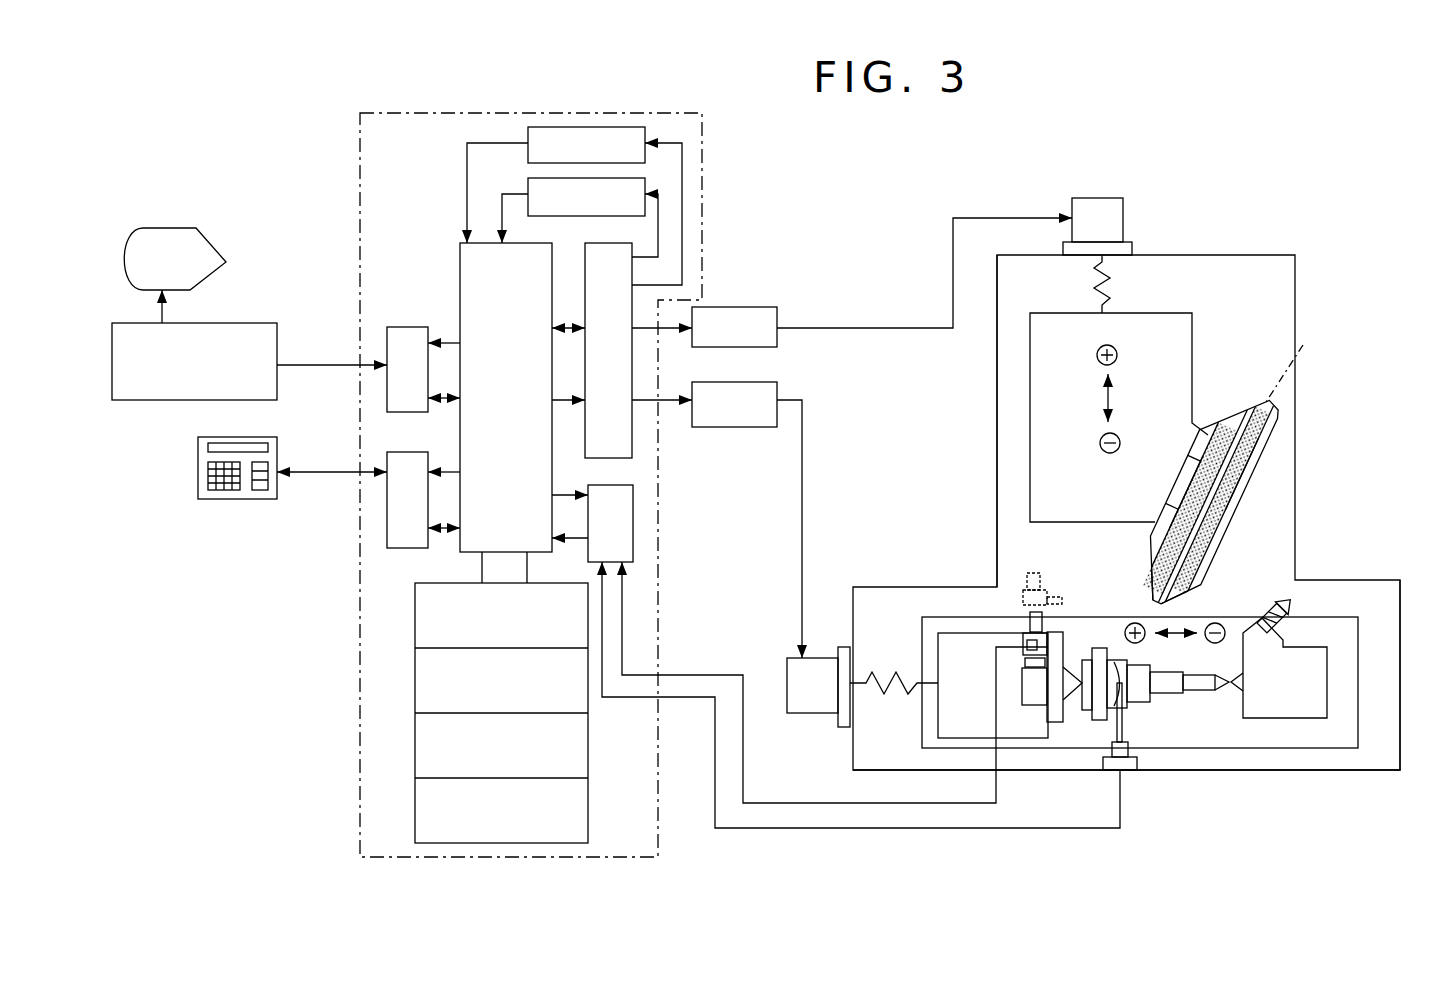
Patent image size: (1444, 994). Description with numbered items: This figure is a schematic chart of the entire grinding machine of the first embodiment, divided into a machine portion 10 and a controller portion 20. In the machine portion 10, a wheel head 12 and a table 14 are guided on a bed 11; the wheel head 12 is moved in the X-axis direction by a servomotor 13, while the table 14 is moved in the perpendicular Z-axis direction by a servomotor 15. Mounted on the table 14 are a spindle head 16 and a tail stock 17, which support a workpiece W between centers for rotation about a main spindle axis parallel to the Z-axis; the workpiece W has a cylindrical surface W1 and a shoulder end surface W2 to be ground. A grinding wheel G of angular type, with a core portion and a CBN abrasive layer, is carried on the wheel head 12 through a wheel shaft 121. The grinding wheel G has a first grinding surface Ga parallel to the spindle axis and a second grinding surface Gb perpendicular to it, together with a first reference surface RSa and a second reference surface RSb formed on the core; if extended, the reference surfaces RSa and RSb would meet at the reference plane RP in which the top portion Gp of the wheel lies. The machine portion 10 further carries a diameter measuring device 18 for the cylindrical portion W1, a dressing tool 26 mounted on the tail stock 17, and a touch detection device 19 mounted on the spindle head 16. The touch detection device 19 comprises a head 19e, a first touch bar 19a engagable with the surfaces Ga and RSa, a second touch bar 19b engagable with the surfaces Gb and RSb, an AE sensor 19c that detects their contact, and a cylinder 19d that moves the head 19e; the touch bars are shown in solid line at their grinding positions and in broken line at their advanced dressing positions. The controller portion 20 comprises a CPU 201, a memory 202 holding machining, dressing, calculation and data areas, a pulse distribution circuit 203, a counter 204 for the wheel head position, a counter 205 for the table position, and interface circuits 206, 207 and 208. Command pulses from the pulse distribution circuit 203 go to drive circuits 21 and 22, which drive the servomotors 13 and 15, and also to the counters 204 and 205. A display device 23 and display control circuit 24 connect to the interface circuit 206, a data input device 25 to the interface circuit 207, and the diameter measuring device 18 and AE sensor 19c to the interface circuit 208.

The machine portion 10 is at (1303, 243).
The bed 11 is at (997, 420).
The wheel head 12 is at (1172, 340).
The servomotor 13 is at (1123, 220).
The table 14 is at (1322, 735).
The servomotor 15 is at (807, 705).
The spindle head 16 is at (958, 718).
The tail stock 17 is at (1320, 678).
The diameter measuring device 18 is at (1122, 752).
The touch detection device 19 is at (1008, 660).
The first touch bar 19a is at (1029, 612).
The second touch bar 19b is at (1062, 637).
The AE sensor 19c is at (1023, 645).
The cylinder 19d is at (1035, 697).
The head 19e is at (1024, 634).
The controller portion 20 is at (703, 178).
The drive circuit 21 is at (773, 307).
The drive circuit 22 is at (755, 382).
The display device 23 is at (213, 243).
The display control circuit 24 is at (247, 323).
The data input device 25 is at (222, 500).
The dressing tool 26 is at (1263, 620).
The wheel shaft 121 is at (1180, 492).
The central processing unit 201 is at (460, 259).
The memory 202 is at (415, 633).
The pulse distribution circuit 203 is at (585, 263).
The counter 204 is at (528, 133).
The counter 205 is at (528, 181).
The interface circuit 206 is at (422, 327).
The interface circuit 207 is at (421, 453).
The interface circuit 208 is at (633, 490).
The grinding wheel G is at (1287, 420).
The first grinding surface Ga is at (1170, 602).
The second grinding surface Gb is at (1156, 598).
The top portion Gp is at (1153, 598).
The reference plane RP is at (1305, 352).
The first reference surface RSa is at (1258, 464).
The second reference surface RSb is at (1168, 538).
The workpiece W is at (1178, 700).
The cylindrical surface W1 is at (1118, 672).
The shoulder end surface W2 is at (1103, 707).